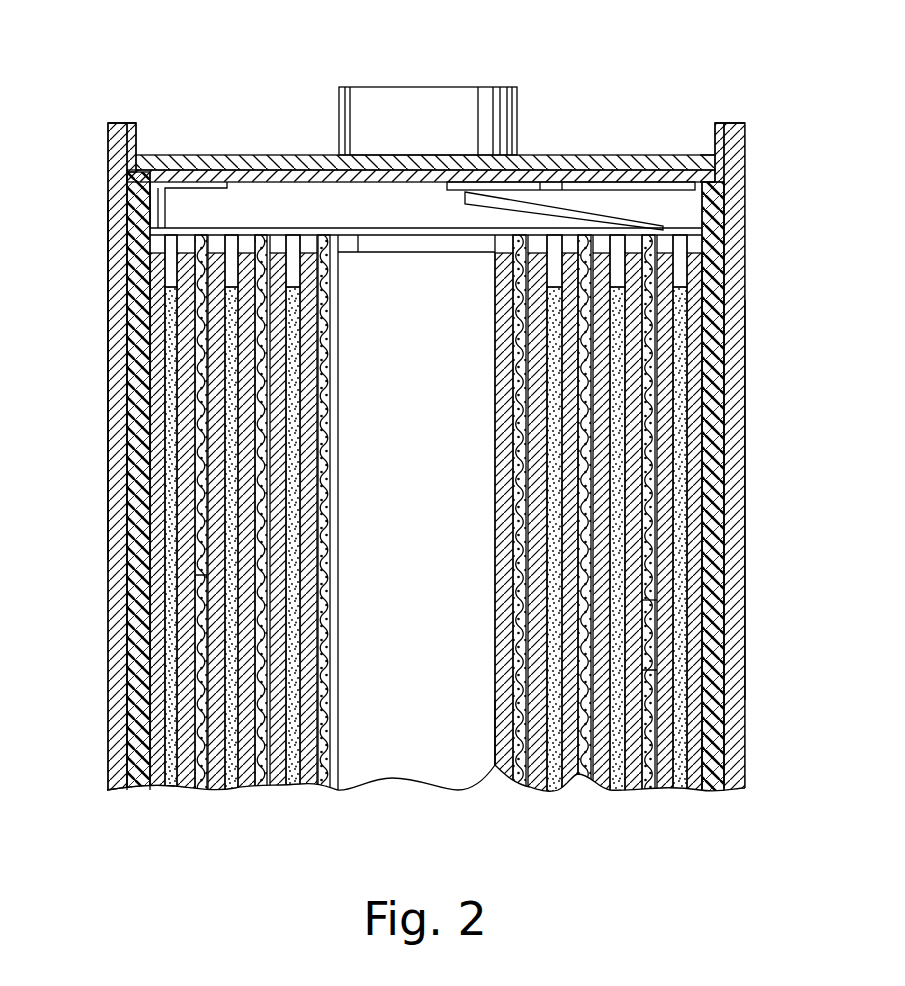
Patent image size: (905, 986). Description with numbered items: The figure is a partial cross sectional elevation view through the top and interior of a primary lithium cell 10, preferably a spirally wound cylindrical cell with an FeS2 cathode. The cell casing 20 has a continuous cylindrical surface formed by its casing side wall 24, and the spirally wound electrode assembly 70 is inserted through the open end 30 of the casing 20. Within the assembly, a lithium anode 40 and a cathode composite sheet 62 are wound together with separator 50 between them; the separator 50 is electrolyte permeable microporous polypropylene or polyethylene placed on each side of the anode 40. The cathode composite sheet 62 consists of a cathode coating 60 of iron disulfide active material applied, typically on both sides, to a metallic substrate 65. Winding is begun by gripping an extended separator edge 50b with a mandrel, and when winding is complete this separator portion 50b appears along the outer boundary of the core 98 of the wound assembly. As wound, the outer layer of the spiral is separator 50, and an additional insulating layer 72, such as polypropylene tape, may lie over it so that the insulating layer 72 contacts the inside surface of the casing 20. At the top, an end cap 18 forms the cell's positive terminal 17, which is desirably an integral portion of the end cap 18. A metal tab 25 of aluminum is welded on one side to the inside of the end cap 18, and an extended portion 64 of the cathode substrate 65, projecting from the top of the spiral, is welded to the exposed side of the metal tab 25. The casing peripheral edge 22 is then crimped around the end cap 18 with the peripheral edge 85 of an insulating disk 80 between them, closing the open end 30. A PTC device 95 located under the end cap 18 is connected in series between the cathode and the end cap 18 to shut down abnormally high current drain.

The cell 10 is at (757, 306).
The positive terminal 17 is at (430, 87).
The end cap 18 is at (246, 155).
The cell casing 20 is at (108, 212).
The casing peripheral edge 22 is at (108, 127).
The casing side wall 24 is at (106, 728).
The metal tab 25 is at (648, 219).
The open end 30 is at (137, 171).
The lithium anode 40 is at (170, 427).
The separator 50 is at (150, 528).
The extended separator edge 50b is at (495, 765).
The cathode coating 60 is at (655, 565).
The cathode composite sheet 62 is at (186, 576).
The extended portion 64 is at (658, 245).
The substrate 65 is at (652, 605).
The spirally wound electrode assembly 70 is at (150, 657).
The insulating layer 72 is at (128, 335).
The insulating disk 80 is at (718, 172).
The peripheral edge of insulating disk 85 is at (128, 123).
The PTC device 95 is at (562, 185).
The core 98 is at (403, 672).